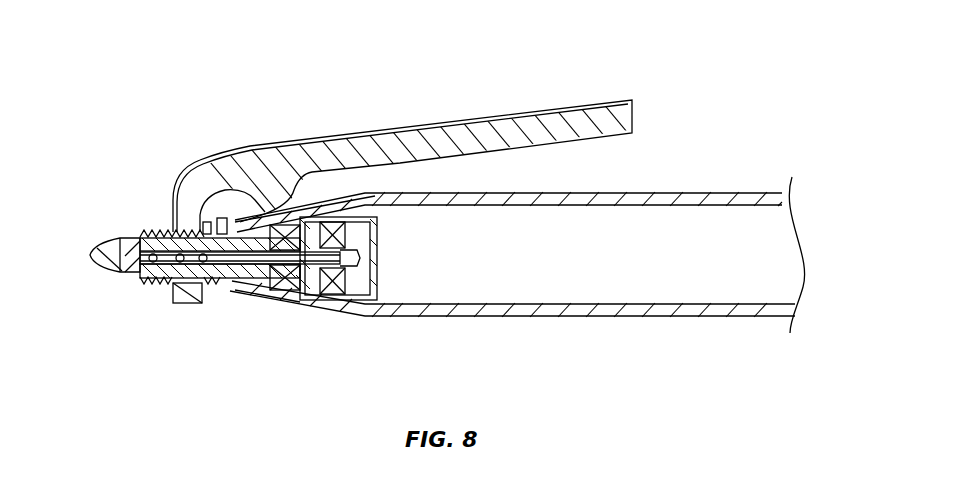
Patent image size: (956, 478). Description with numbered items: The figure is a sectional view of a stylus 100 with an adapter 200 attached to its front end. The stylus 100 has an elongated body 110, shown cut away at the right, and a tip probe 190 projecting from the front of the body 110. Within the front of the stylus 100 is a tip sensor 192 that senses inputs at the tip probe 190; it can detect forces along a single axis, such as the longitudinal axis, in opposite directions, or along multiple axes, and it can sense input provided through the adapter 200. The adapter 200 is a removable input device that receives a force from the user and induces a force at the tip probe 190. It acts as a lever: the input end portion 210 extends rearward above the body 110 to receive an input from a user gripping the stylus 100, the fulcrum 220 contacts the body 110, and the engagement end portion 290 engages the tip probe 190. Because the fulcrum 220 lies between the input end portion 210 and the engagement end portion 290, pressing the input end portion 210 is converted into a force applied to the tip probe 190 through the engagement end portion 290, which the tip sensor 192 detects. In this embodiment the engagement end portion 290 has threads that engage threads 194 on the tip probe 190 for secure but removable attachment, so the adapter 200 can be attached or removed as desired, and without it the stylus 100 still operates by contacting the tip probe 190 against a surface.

The stylus 100 is at (70, 112).
The body 110 is at (768, 316).
The tip probe 190 is at (90, 256).
The tip sensor 192 is at (248, 280).
The threads 194 is at (148, 283).
The adapter 200 is at (175, 187).
The input end portion 210 is at (570, 105).
The fulcrum 220 is at (275, 178).
The engagement end portion 290 is at (172, 228).